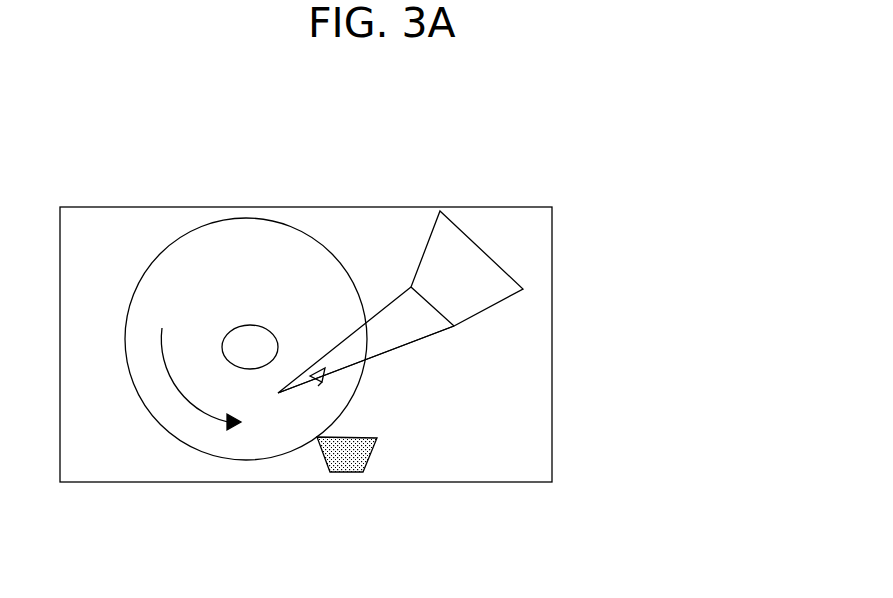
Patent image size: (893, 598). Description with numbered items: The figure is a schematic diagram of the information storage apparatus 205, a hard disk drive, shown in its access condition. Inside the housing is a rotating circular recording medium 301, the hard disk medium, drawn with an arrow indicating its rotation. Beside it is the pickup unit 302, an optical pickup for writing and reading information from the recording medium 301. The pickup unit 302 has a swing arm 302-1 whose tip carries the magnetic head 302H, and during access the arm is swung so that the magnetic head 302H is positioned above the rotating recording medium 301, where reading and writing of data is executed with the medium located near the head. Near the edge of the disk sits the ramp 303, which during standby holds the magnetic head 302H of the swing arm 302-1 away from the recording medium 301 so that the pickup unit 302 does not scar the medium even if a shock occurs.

The information storage apparatus 205 is at (530, 122).
The recording medium 301 is at (225, 275).
The pickup unit 302 is at (290, 388).
The magnetic head 302H is at (310, 375).
The swing arm 302-1 is at (413, 341).
The ramp 303 is at (357, 462).